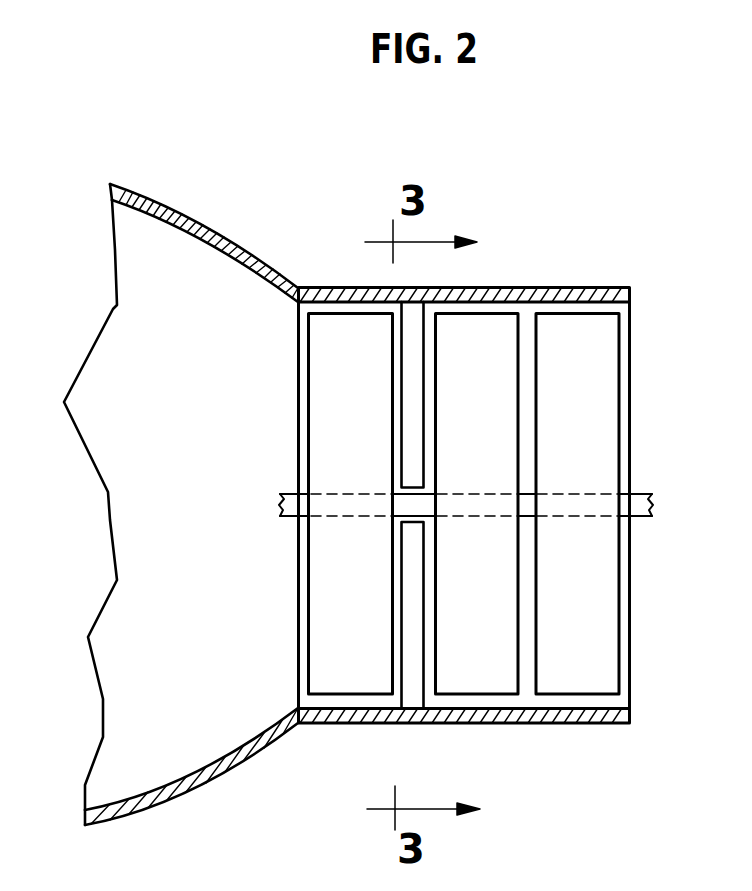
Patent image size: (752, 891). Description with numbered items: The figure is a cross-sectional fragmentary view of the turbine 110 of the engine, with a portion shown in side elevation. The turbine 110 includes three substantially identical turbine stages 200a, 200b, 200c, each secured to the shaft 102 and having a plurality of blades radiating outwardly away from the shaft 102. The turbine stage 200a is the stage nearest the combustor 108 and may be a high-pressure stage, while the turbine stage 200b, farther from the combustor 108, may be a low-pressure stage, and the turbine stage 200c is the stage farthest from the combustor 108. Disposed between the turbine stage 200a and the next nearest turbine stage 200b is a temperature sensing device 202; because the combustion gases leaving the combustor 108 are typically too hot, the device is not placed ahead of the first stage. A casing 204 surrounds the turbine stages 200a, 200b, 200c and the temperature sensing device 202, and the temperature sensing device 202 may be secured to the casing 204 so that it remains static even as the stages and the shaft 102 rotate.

The shaft 102 is at (283, 510).
The combustor 108 is at (170, 790).
The turbine 110 is at (505, 157).
The turbine stage 200a is at (335, 680).
The turbine stage 200b is at (510, 690).
The turbine stage 200c is at (598, 686).
The temperature sensing device 202 is at (412, 695).
The casing 204 is at (500, 290).